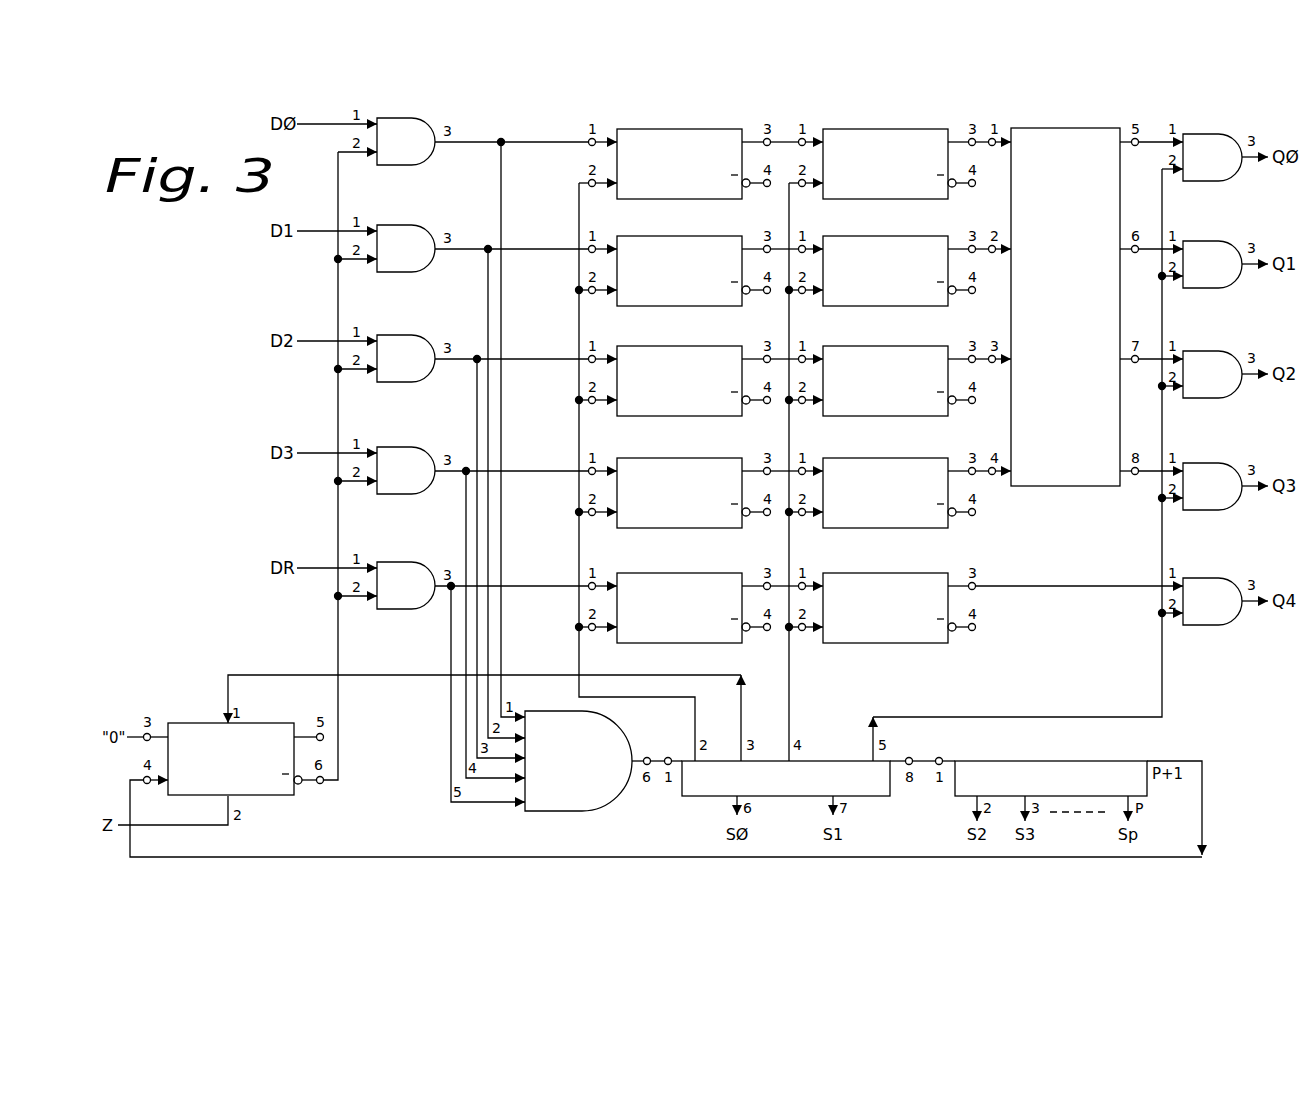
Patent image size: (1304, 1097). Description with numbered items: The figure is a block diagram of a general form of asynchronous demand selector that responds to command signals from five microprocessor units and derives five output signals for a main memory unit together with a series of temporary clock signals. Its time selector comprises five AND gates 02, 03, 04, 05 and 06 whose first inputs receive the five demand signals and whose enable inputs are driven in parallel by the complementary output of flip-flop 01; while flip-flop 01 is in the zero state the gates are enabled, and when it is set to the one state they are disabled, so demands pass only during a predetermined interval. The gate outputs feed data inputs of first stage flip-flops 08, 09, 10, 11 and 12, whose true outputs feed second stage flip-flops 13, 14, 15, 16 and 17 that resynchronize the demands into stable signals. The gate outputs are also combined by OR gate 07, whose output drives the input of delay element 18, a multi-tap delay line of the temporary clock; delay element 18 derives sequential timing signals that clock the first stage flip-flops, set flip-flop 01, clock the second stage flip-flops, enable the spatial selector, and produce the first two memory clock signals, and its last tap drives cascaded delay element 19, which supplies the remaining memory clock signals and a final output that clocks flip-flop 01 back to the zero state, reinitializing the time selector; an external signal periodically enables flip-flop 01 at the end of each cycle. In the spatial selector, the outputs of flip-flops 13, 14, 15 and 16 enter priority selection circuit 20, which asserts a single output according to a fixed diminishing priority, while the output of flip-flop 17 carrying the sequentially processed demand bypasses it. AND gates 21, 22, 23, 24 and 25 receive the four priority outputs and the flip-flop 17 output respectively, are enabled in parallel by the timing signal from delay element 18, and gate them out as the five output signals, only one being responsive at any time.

The flip-flop 01 is at (197, 737).
The AND gate 02 is at (410, 155).
The AND gate 03 is at (414, 261).
The AND gate 04 is at (414, 371).
The AND gate 05 is at (414, 483).
The AND gate 06 is at (414, 598).
The OR gate 07 is at (577, 788).
The flip-flop 08 is at (675, 143).
The flip-flop 09 is at (679, 257).
The flip-flop 10 is at (679, 367).
The flip-flop 11 is at (679, 479).
The flip-flop 12 is at (679, 594).
The flip-flop 13 is at (880, 143).
The flip-flop 14 is at (885, 257).
The flip-flop 15 is at (885, 367).
The flip-flop 16 is at (885, 479).
The flip-flop 17 is at (885, 594).
The delay element 18 is at (707, 783).
The delay element 19 is at (970, 783).
The priority selection circuit 20 is at (1077, 470).
The AND gate 21 is at (1212, 150).
The AND gate 22 is at (1212, 249).
The AND gate 23 is at (1212, 359).
The AND gate 24 is at (1212, 471).
The AND gate 25 is at (1212, 586).